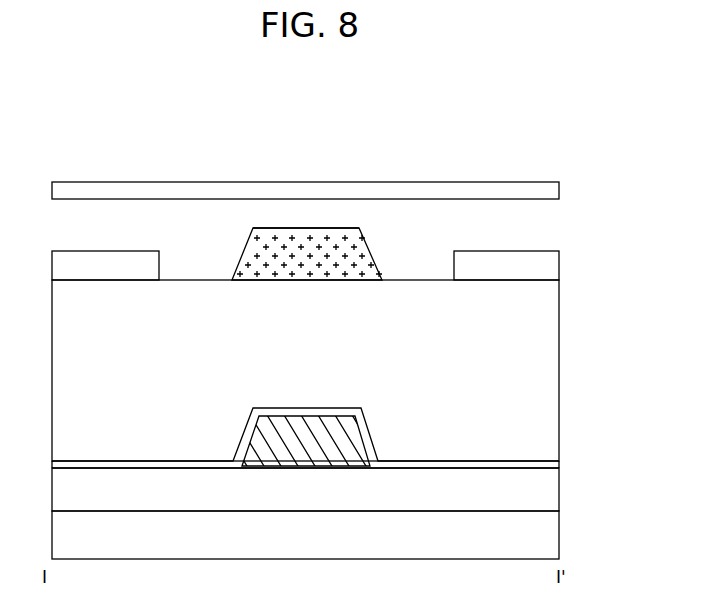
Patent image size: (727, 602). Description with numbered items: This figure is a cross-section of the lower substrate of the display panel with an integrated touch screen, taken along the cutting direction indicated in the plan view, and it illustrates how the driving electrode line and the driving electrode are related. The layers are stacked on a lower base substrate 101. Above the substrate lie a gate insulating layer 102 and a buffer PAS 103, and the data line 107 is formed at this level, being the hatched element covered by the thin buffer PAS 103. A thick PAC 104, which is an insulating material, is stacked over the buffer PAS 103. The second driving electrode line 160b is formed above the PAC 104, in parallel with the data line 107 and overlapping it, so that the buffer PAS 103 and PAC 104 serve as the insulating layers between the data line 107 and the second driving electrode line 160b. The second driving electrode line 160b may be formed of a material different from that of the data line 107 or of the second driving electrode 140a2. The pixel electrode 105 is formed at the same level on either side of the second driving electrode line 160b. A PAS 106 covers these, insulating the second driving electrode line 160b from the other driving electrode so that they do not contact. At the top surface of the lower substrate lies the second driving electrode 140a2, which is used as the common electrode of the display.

The lower base substrate 101 is at (540, 538).
The gate insulating layer 102 is at (540, 493).
The buffer PAS 103 is at (540, 462).
The PAC 104 is at (540, 331).
The pixel electrode 105 is at (540, 266).
The PAS 106 is at (540, 222).
The data line 107 is at (342, 442).
The second driving electrode 140a2 is at (540, 187).
The second driving electrode line 160b is at (330, 228).